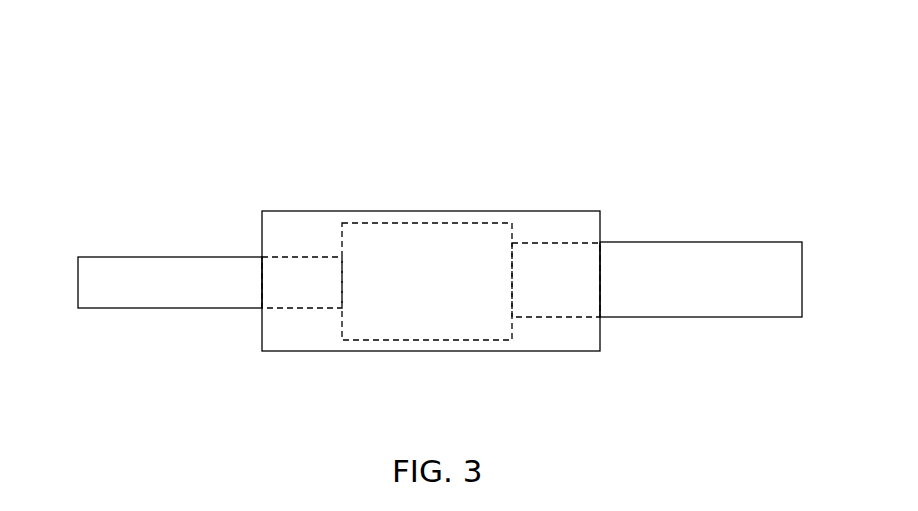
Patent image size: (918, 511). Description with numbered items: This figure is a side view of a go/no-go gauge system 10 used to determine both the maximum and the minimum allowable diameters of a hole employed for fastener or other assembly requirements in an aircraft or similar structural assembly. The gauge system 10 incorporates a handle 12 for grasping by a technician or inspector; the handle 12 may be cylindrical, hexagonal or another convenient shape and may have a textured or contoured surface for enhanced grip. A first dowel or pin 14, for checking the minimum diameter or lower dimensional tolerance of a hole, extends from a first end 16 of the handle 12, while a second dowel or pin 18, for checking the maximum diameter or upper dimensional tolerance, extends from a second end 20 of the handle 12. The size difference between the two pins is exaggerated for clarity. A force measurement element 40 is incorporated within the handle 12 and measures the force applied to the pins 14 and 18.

The gauge system 10 is at (433, 183).
The handle 12 is at (298, 211).
The first dowel or pin 14 is at (103, 257).
The first end 16 is at (262, 328).
The second dowel or pin 18 is at (706, 243).
The second end 20 is at (600, 228).
The force measurement element 40 is at (461, 320).